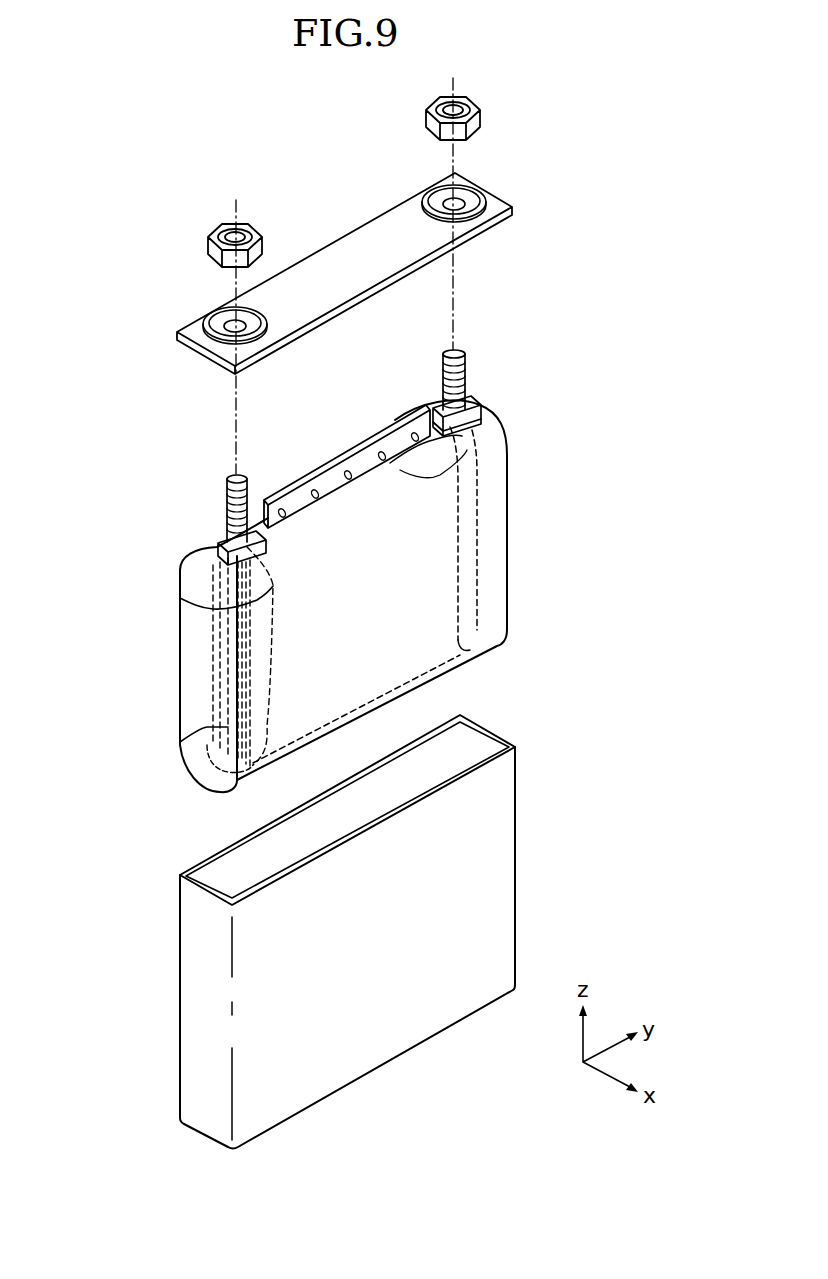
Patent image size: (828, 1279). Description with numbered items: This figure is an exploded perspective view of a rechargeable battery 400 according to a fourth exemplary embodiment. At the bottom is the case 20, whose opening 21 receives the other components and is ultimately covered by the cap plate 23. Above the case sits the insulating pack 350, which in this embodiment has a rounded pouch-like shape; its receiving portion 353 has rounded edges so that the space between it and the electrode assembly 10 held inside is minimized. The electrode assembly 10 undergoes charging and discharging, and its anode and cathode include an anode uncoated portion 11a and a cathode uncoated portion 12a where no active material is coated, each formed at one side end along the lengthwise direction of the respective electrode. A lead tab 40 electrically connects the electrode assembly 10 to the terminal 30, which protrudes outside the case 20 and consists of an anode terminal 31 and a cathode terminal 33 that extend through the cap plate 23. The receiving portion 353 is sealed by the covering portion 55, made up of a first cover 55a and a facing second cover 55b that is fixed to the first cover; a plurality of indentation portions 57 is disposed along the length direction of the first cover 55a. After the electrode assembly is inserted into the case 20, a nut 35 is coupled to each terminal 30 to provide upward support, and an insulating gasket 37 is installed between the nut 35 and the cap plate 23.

The rechargeable battery 400 is at (270, 138).
The nut 35 is at (213, 238).
The cap plate 23 is at (337, 257).
The gasket 37 is at (210, 320).
The terminal 30 is at (368, 345).
The anode terminal 31 is at (241, 478).
The cathode terminal 33 is at (447, 353).
The covering portion 55 is at (597, 382).
The first cover 55a is at (467, 450).
The second cover 55b is at (460, 405).
The indentation portions 57 is at (383, 453).
The electrode assembly 10 is at (427, 593).
The cathode uncoated portion 12a is at (508, 546).
The receiving portion 353 is at (466, 656).
The anode uncoated portion 11a is at (180, 598).
The insulating pack 350 is at (172, 661).
The lead tab 40 is at (180, 742).
The case 20 is at (408, 932).
The opening 21 is at (465, 753).